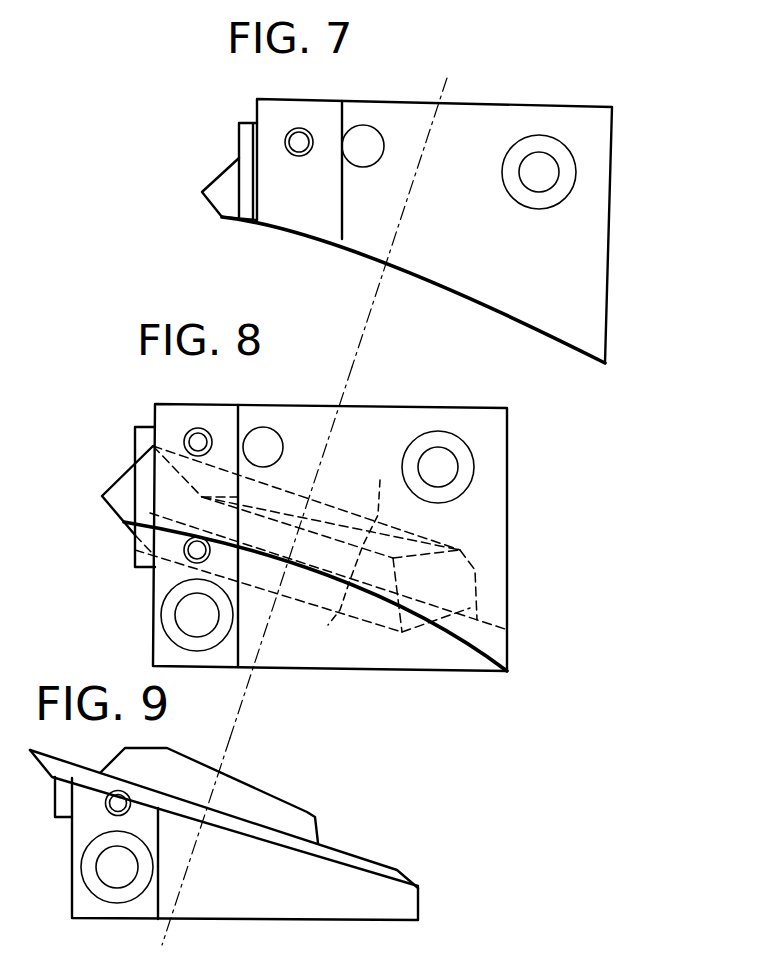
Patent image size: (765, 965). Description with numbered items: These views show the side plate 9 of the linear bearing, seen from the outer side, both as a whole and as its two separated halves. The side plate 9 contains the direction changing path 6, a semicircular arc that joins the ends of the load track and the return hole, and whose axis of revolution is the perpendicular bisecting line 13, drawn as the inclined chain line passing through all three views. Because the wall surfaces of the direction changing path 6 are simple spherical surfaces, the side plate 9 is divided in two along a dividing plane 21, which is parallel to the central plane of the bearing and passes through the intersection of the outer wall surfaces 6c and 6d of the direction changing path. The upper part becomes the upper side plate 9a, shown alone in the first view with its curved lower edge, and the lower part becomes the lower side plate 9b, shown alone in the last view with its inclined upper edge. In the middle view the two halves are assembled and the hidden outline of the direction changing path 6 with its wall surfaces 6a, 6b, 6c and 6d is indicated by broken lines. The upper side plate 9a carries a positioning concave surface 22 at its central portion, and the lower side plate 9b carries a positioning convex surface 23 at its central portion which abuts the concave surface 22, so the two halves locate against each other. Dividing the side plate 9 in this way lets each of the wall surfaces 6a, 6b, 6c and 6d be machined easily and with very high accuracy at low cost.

In FIG. 8, the direction changing path 6 is at (505, 625).
In FIG. 8, the wall surface of the direction changing path 6a is at (413, 543).
In FIG. 8, the wall surface of the direction changing path 6b is at (370, 618).
In FIG. 9, the wall surface of the direction changing path 6b is at (320, 833).
In FIG. 8, the outer wall surface of the direction changing path 6c is at (465, 572).
In FIG. 8, the outer wall surface of the direction changing path 6d is at (420, 630).
In FIG. 8, the side plate 9 is at (513, 479).
In FIG. 7, the upper side plate 9a is at (495, 112).
In FIG. 8, the upper side plate 9a is at (357, 420).
In FIG. 8, the lower side plate 9b is at (418, 662).
In FIG. 9, the lower side plate 9b is at (297, 900).
In FIG. 7, the perpendicular bisecting line 13 is at (362, 337).
In FIG. 7, the dividing plane 21 is at (220, 187).
In FIG. 8, the dividing plane 21 is at (122, 498).
In FIG. 9, the dividing plane 21 is at (377, 858).
In FIG. 8, the positioning concave surface 22 is at (314, 640).
In FIG. 8, the positioning convex surface 23 is at (360, 541).
In FIG. 9, the positioning convex surface 23 is at (298, 800).